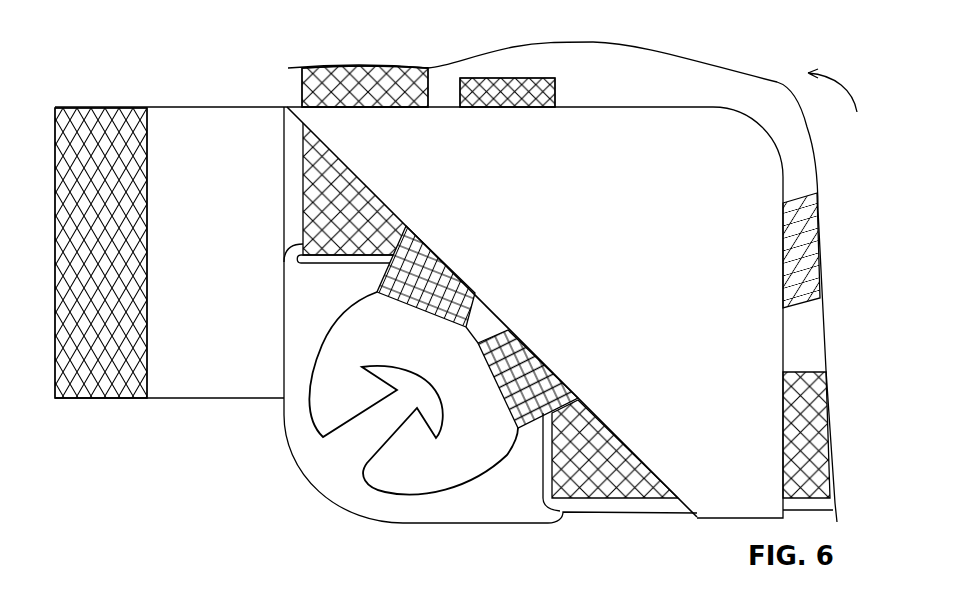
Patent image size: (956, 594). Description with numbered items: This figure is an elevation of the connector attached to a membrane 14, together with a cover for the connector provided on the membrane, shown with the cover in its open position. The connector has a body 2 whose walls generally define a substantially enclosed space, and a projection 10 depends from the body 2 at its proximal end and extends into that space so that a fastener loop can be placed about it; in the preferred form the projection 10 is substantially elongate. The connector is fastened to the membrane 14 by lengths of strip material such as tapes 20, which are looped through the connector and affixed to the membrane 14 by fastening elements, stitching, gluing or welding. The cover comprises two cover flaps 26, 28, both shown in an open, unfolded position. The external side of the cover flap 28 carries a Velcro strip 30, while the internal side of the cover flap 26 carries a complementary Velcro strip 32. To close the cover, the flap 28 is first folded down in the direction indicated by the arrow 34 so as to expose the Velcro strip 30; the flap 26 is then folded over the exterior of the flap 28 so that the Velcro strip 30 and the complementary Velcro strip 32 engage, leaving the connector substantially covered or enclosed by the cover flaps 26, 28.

The body 2 is at (443, 512).
The projection 10 is at (378, 420).
The membrane 14 is at (562, 282).
The tapes 20 is at (348, 82).
The cover flap 26 is at (169, 252).
The cover flap 28 is at (533, 312).
The Velcro strip 30 is at (497, 78).
The complementary Velcro strip 32 is at (70, 120).
The arrow 34 is at (839, 105).